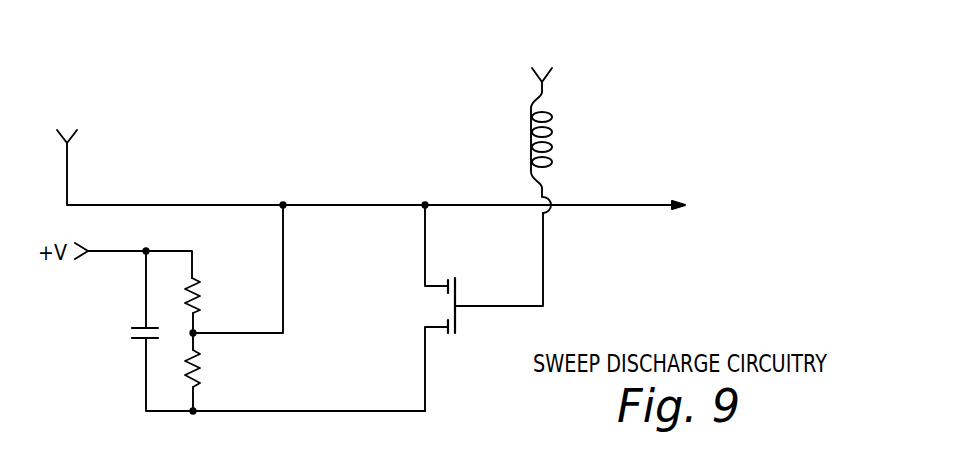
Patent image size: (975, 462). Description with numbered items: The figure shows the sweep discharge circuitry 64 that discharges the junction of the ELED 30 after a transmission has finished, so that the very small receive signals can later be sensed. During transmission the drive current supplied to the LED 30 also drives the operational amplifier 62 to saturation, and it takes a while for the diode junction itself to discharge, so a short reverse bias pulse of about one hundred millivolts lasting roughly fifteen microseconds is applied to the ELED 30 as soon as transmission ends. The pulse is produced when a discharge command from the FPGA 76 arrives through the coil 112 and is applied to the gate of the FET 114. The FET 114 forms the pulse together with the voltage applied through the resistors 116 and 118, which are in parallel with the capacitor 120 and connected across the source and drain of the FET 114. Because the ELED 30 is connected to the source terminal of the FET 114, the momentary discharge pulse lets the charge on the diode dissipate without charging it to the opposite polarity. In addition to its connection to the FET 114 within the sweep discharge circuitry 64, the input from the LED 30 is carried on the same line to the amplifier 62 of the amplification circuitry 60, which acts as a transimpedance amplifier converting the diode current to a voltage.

The sweep discharge circuitry 64 is at (98, 359).
The LED 30 is at (67, 109).
The FPGA 76 is at (547, 51).
The operational amplifier 62 is at (734, 205).
The amplification circuitry 60 is at (766, 221).
The coil 112 is at (551, 135).
The FET 114 is at (416, 315).
The resistor 116 is at (202, 300).
The resistor 118 is at (202, 363).
The capacitor 120 is at (132, 332).